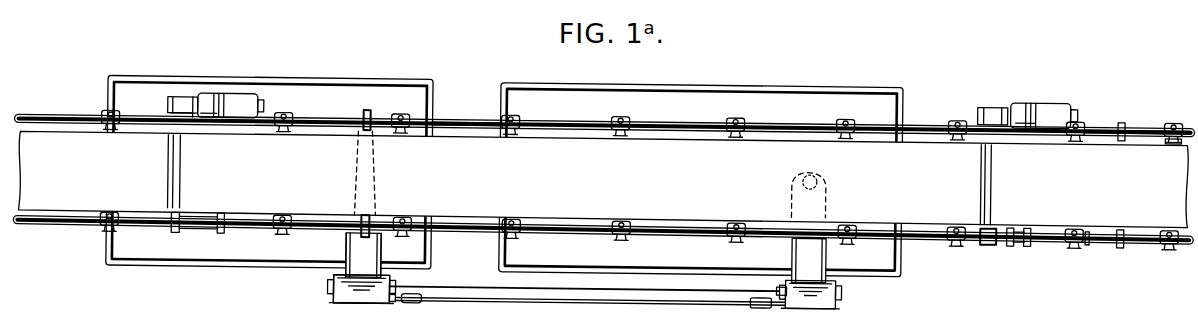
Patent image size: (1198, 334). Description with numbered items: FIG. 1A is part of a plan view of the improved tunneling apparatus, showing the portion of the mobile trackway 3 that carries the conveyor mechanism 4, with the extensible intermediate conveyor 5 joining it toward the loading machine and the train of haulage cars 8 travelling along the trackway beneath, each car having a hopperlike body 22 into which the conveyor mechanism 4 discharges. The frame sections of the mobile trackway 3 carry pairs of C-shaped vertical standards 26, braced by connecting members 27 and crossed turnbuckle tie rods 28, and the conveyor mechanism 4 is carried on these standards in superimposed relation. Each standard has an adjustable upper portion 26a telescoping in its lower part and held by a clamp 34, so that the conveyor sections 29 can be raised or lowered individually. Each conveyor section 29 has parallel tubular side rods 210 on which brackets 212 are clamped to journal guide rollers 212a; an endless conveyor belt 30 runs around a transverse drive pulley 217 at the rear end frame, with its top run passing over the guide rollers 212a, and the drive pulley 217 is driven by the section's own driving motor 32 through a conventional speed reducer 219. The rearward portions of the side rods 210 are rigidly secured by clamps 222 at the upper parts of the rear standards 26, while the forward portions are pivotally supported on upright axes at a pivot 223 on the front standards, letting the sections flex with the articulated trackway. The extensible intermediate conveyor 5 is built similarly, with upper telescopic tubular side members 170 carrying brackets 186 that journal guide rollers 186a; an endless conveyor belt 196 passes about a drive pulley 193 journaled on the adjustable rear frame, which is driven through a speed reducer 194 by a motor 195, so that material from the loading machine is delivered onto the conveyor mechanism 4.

The mobile trackway 3 is at (329, 285).
The conveyor mechanism 4 is at (466, 107).
The extensible intermediate conveyor 5 is at (1147, 110).
The train of haulage cars 8 is at (768, 74).
The hopperlike body 22 is at (297, 84).
The vertical standard 26 is at (365, 296).
The adjustable upper portion 26a is at (358, 245).
The connecting member 27 is at (443, 287).
The crossed turnbuckle tie rod 28 is at (638, 302).
The conveyor section 29 is at (688, 237).
The endless conveyor belt 30 is at (57, 147).
The driving motor 32 is at (230, 104).
The clamp 34 is at (343, 306).
The upper telescopic tubular side member 170 is at (1128, 116).
The bracket 186 is at (1173, 116).
The guide roller 186a is at (1170, 134).
The drive pulley 193 is at (990, 235).
The speed reducer 194 is at (997, 108).
The motor 195 is at (1048, 100).
The endless conveyor belt 196 is at (1058, 206).
The tubular side rod 210 is at (480, 118).
The bracket 212 is at (400, 114).
The guide roller 212a is at (723, 126).
The drive pulley 217 is at (170, 232).
The speed reducer 219 is at (180, 108).
The clamp 222 is at (360, 220).
The pivot 223 is at (800, 180).